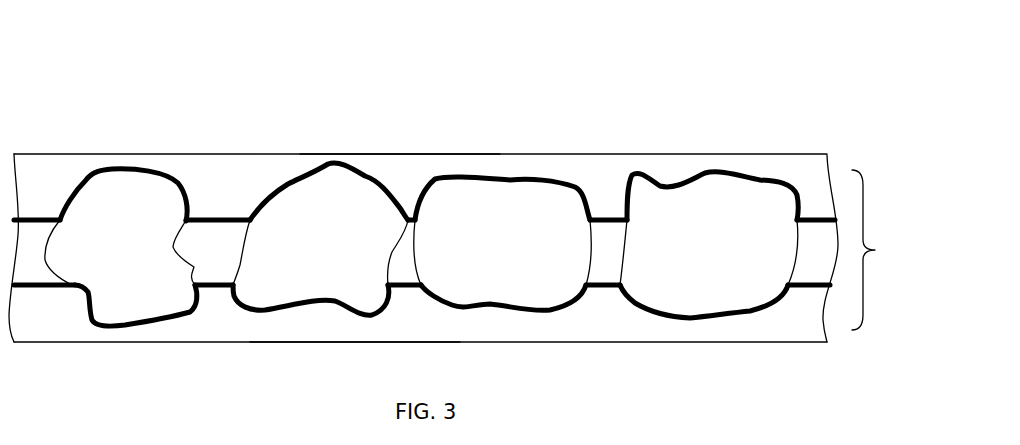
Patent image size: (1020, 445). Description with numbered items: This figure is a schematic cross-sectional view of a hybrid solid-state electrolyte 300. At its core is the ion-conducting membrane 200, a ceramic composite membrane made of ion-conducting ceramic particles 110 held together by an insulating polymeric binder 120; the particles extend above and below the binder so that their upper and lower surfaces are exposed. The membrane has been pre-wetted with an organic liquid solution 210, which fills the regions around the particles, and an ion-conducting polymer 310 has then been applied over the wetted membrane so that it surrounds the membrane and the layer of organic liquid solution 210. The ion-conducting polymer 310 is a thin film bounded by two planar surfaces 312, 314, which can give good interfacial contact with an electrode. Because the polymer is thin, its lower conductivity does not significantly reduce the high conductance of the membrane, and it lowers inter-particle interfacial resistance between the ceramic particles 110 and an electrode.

The hybrid solid-state electrolyte 300 is at (132, 110).
The ion-conducting polymer 310 is at (800, 167).
The planar surface 312 is at (408, 154).
The planar surface 314 is at (357, 342).
The ion-conducting membrane 200 is at (469, 250).
The ion-conducting ceramic particles 110 is at (310, 192).
The organic liquid solution 210 is at (613, 353).
The insulating polymeric binder 120 is at (617, 283).